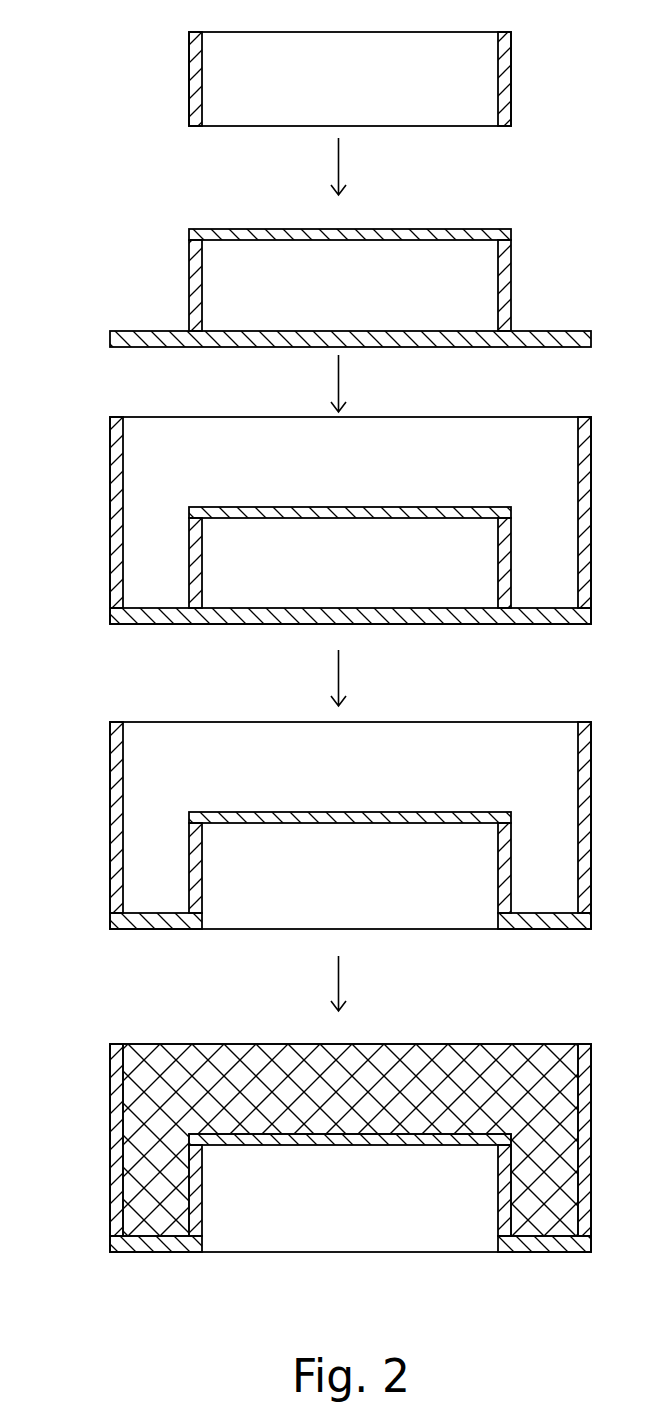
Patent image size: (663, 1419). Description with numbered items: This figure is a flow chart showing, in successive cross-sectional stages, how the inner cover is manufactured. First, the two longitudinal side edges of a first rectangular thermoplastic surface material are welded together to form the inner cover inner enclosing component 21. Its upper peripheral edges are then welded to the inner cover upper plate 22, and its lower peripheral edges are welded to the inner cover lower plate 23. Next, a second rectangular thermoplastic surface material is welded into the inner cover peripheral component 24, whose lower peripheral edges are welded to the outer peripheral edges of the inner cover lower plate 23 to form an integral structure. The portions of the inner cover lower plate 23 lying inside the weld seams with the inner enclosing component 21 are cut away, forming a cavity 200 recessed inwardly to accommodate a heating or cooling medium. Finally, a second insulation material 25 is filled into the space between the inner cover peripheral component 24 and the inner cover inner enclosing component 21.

The inner cover inner enclosing component 21 is at (198, 88).
The inner cover upper plate 22 is at (198, 235).
The inner cover lower plate 23 is at (118, 340).
The inner cover peripheral component 24 is at (118, 583).
The second insulation material 25 is at (132, 1156).
The cavity 200 is at (392, 1193).